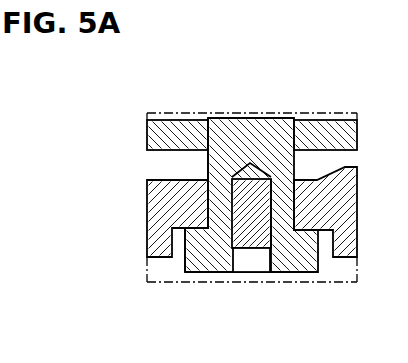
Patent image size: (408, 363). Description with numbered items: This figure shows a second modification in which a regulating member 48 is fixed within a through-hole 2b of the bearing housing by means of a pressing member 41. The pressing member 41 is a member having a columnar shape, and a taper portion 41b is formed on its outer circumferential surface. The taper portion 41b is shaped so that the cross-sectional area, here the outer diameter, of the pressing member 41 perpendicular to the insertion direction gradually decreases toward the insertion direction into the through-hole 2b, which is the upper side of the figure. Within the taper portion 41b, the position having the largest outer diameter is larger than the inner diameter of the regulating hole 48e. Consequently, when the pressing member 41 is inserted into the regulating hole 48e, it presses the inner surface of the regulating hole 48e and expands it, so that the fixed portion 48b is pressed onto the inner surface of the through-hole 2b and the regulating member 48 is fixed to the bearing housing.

The regulating member 48 is at (258, 108).
The fixed portion 48b is at (208, 203).
The regulating hole 48e is at (230, 273).
The pressing member 41 is at (250, 250).
The taper portion 41b is at (292, 272).
The through-hole 2b is at (207, 178).